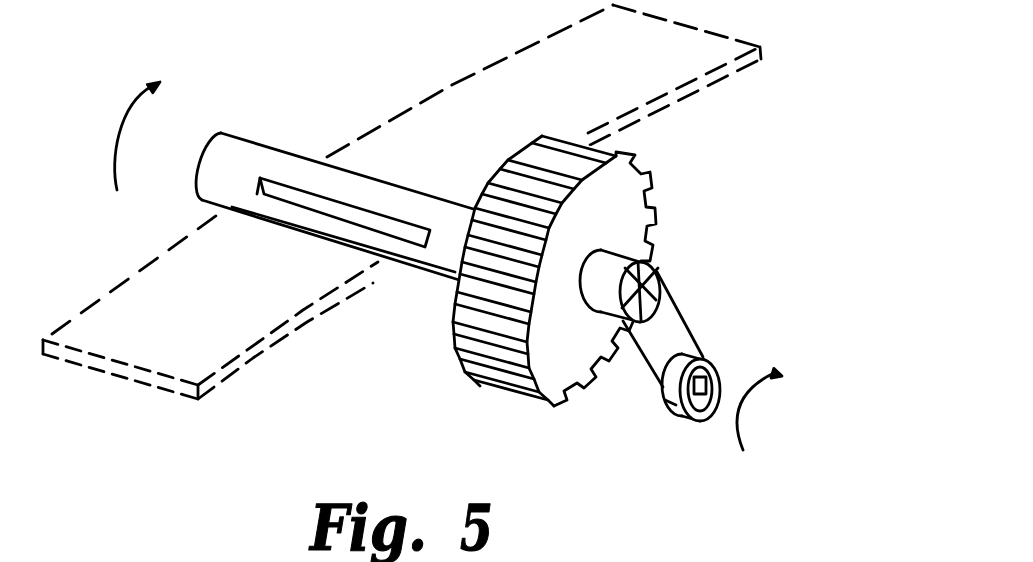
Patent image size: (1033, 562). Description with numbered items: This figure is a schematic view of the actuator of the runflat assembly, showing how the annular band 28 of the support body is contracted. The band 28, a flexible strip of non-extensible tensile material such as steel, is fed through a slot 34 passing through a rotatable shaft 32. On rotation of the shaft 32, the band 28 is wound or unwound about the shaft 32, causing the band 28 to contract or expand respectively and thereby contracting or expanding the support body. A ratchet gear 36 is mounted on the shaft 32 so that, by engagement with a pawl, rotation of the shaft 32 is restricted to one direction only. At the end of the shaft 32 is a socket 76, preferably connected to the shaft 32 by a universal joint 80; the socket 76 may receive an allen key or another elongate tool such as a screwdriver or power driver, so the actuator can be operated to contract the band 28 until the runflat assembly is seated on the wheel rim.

The annular band 28 is at (237, 340).
The rotatable shaft 32 is at (233, 157).
The slot 34 is at (366, 217).
The ratchet gear 36 is at (610, 205).
The socket 76 is at (688, 418).
The universal joint 80 is at (648, 292).